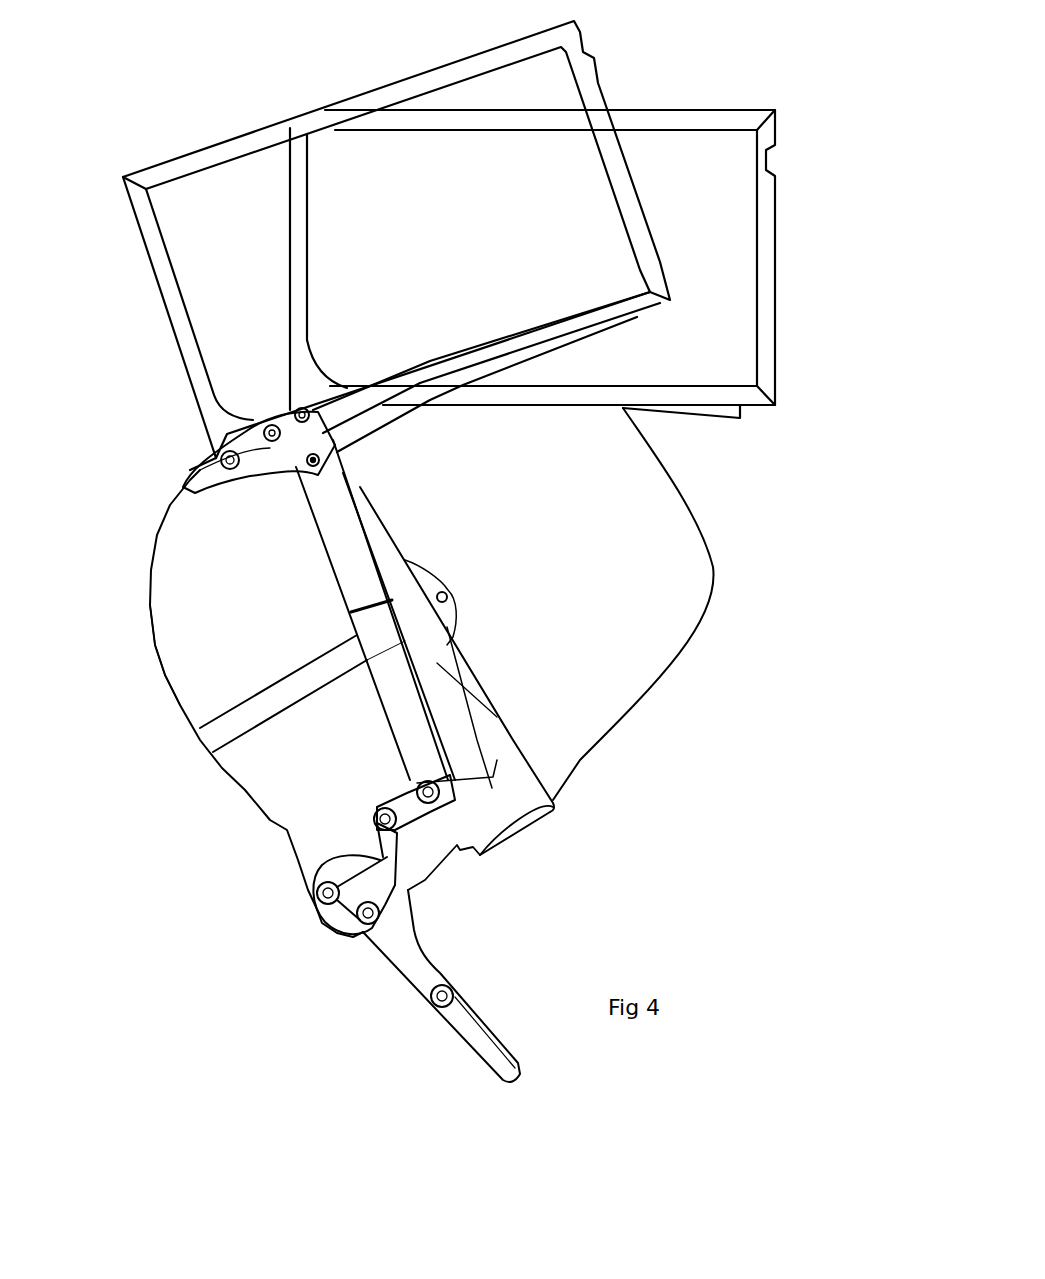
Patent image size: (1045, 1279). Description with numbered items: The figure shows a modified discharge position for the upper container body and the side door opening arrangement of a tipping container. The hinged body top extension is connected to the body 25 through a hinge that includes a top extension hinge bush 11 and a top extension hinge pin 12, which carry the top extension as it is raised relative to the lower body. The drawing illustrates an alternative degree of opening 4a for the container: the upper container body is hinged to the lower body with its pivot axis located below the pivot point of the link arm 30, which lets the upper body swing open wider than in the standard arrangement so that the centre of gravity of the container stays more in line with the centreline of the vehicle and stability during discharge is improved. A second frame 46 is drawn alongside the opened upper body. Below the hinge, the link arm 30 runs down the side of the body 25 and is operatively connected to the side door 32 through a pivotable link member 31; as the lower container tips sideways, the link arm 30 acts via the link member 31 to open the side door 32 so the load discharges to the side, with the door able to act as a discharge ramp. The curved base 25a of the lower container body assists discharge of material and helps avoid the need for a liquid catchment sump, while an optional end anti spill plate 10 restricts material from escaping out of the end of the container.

The alternative degree of opening 4a is at (178, 150).
The frame 46 is at (698, 108).
The end anti spill plate 10 is at (578, 727).
The top extension hinge bush 11 is at (215, 456).
The top extension hinge pin 12 is at (212, 447).
The body 25 is at (187, 657).
The curved base 25a is at (152, 648).
The link arm 30 is at (313, 535).
The link member 31 is at (420, 827).
The side door 32 is at (403, 990).